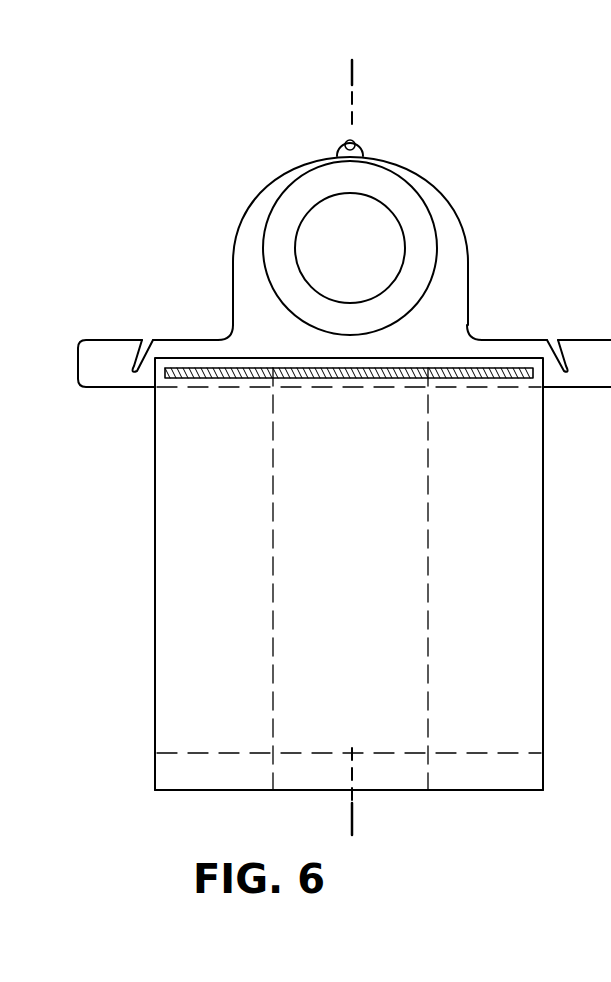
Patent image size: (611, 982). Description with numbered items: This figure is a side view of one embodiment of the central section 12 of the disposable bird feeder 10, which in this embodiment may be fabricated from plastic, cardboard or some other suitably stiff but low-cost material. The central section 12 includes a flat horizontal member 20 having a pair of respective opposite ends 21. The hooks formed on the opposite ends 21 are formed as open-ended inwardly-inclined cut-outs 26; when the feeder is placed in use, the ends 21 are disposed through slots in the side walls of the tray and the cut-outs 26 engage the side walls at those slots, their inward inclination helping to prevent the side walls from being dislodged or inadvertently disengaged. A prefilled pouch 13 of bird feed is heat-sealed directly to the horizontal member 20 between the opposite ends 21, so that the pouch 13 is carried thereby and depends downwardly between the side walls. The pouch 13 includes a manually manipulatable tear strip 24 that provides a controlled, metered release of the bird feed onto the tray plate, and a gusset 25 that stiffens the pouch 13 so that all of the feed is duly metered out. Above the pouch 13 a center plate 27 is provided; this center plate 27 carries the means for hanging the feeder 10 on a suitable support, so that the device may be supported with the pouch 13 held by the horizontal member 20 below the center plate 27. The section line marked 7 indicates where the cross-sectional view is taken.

The section line 7- 7 is at (366, 73).
The disposable bird feeder 10 is at (124, 768).
The central section 12 is at (213, 200).
The prefilled pouch 13 is at (520, 563).
The horizontal member 20 is at (490, 347).
The opposite ends 21 is at (97, 372).
The tear strip 24 is at (465, 753).
The gusset 25 is at (176, 666).
The inwardly-inclined cut-outs 26 is at (135, 362).
The center plate 27 is at (437, 212).